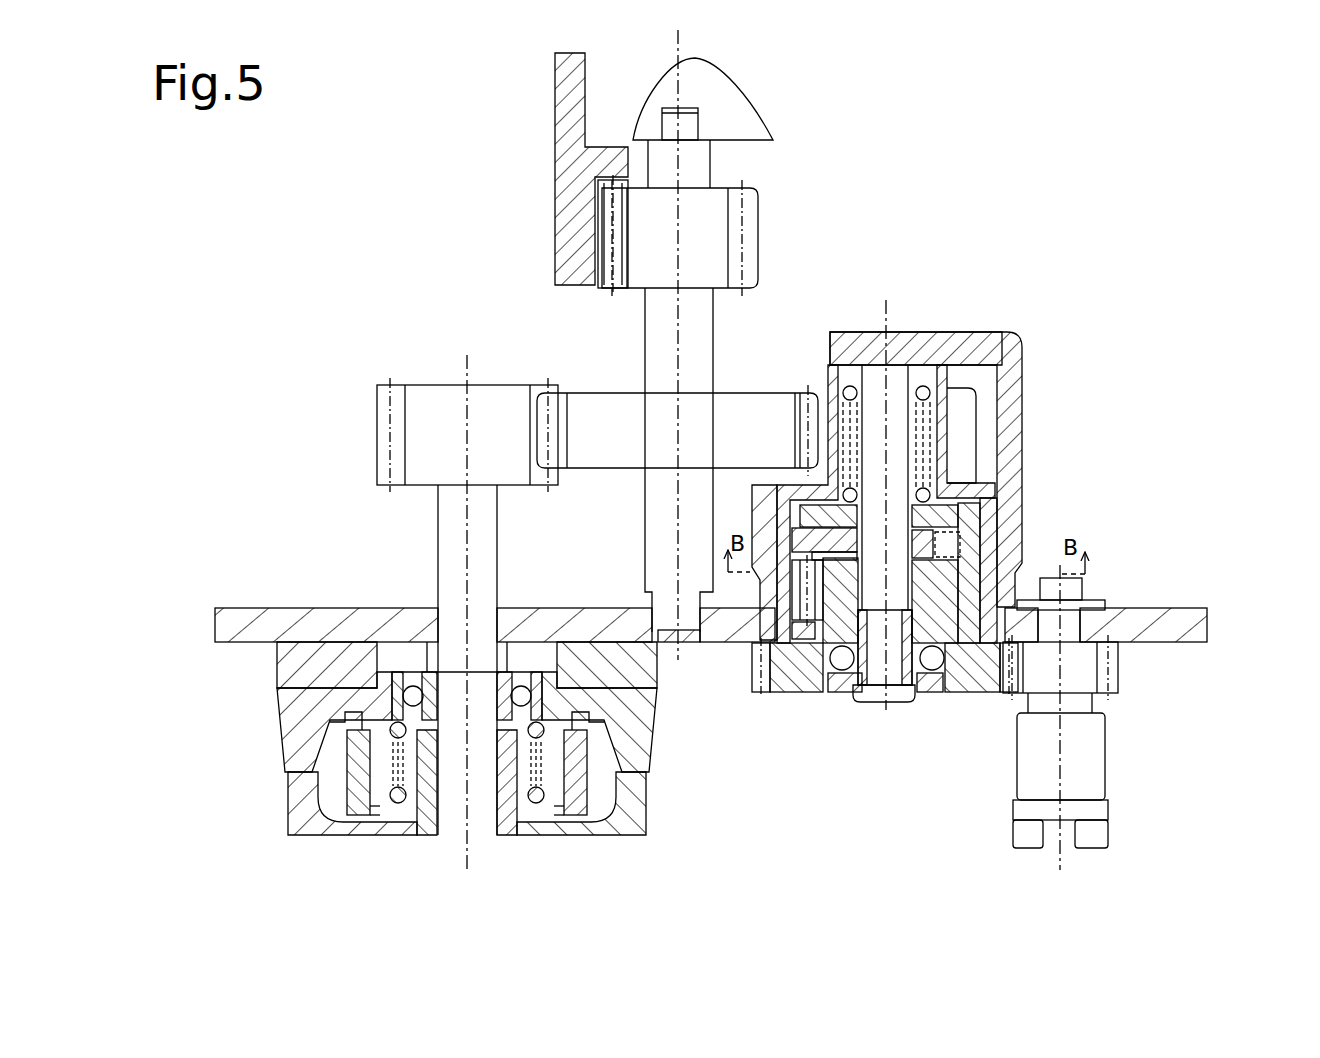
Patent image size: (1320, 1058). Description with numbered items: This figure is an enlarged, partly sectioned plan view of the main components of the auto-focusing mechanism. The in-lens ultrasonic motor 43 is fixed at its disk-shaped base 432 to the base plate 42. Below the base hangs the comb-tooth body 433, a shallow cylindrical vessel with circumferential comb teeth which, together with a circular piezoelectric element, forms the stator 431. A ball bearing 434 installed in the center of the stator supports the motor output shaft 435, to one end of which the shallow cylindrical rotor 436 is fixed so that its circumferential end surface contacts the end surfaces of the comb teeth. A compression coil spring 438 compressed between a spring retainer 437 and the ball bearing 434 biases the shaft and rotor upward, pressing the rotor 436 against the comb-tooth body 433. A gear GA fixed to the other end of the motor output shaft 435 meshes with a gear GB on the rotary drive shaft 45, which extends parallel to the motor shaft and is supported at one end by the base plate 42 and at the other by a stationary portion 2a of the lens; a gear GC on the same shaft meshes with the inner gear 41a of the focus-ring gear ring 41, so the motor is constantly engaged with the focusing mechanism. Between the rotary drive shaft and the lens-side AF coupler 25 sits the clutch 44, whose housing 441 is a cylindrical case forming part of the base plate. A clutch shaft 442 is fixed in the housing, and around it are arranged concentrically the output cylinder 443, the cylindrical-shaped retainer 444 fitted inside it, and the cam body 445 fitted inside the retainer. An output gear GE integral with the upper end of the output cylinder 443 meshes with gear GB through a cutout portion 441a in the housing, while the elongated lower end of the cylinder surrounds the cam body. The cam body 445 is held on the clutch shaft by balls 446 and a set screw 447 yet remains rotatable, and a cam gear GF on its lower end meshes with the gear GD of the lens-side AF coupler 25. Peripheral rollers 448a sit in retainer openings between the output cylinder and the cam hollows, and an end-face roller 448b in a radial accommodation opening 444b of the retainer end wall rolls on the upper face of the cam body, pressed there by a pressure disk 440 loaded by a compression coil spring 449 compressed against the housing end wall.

The focus-ring gear ring 41 is at (568, 86).
The inner gear 41a is at (605, 155).
The stationary portion 2a is at (748, 118).
The gear GC is at (752, 240).
The rotary drive shaft 45 is at (655, 325).
The gear GA is at (375, 420).
The gear GB is at (610, 412).
The output gear GE is at (803, 385).
The motor output shaft 435 is at (450, 530).
The base plate 42 is at (1200, 635).
The in-lens ultrasonic motor 43 is at (400, 740).
The stator 431 is at (400, 707).
The disk-shaped base 432 is at (300, 665).
The comb-tooth body 433 is at (436, 722).
The ball bearing 434 is at (405, 680).
The rotor 436 is at (325, 830).
The spring retainer 437 is at (405, 840).
The compression coil spring 438 is at (510, 840).
The clutch 44 is at (930, 524).
The housing 441 is at (1005, 392).
The cutout portion 441a is at (825, 345).
The clutch shaft 442 is at (895, 372).
The output cylinder 443 is at (942, 440).
The compression coil spring 449 is at (948, 372).
The pressure disk 440 is at (978, 498).
The peripheral roller 448a is at (797, 640).
The end-face roller 448b is at (958, 527).
The cylindrical-shaped retainer 444 is at (1075, 590).
The radial accommodation opening 444b is at (960, 545).
The cam body 445 is at (807, 662).
The ball 446 is at (845, 680).
The set screw 447 is at (890, 705).
The cam gear GF is at (990, 692).
The gear GD is at (1117, 665).
The lens-side AF coupler 25 is at (1093, 835).